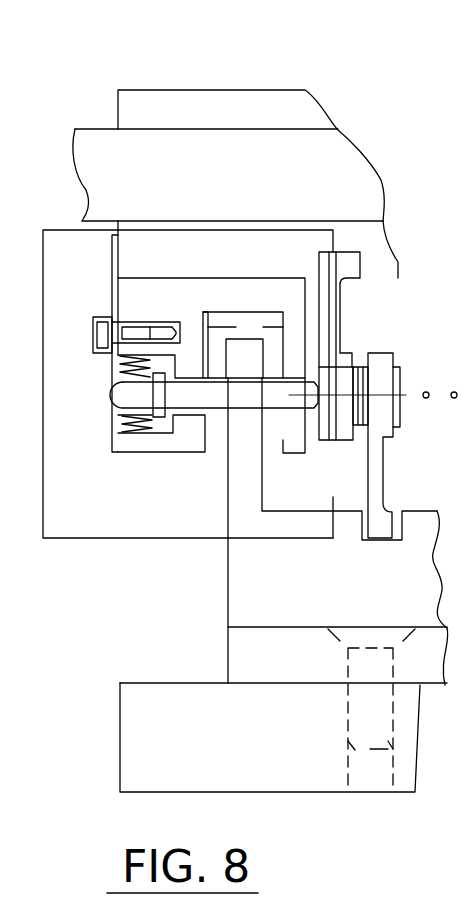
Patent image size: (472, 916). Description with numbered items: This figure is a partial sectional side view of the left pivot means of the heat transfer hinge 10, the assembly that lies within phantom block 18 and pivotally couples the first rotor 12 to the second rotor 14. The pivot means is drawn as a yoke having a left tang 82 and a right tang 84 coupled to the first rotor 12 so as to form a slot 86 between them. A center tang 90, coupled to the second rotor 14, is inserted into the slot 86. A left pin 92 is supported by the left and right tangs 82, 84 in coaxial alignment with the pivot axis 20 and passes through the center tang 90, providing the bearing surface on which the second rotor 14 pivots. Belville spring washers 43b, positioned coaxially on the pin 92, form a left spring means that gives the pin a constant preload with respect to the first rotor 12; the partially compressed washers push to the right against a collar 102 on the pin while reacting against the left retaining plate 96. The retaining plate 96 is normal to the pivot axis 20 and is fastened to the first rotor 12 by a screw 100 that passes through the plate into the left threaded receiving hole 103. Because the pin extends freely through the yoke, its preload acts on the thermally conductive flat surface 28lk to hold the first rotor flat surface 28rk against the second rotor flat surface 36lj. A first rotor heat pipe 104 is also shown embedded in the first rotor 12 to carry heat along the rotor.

The heat transfer hinge 10 is at (268, 82).
The first rotor heat pipe 104 is at (116, 164).
The first rotor 12 is at (205, 266).
The phantom block 18 is at (147, 523).
The left retaining plate 96 is at (110, 263).
The screw 100 is at (102, 317).
The left threaded receiving hole 103 is at (183, 320).
The left tang 82 is at (194, 372).
The right tang 84 is at (290, 372).
The slot 86 is at (245, 346).
The Belville spring washers 43b is at (122, 369).
The collar 102 is at (166, 396).
The left pin 92 is at (261, 410).
The center tang 90 is at (332, 530).
The thermally conductive flat surface 28lk is at (312, 428).
The first rotor flat surface 28rk is at (360, 367).
The second rotor flat surface 36lj is at (359, 428).
The pivot axis 20 is at (406, 397).
The second rotor 14 is at (292, 599).